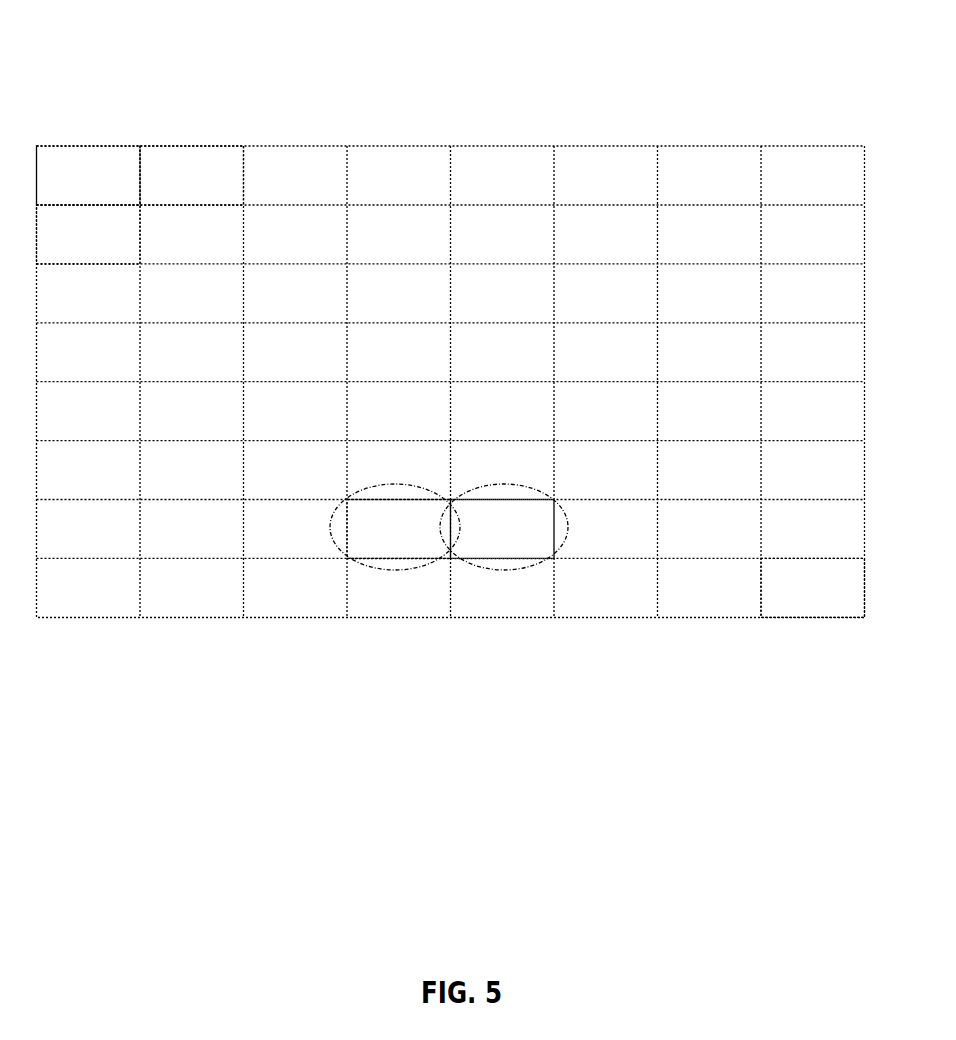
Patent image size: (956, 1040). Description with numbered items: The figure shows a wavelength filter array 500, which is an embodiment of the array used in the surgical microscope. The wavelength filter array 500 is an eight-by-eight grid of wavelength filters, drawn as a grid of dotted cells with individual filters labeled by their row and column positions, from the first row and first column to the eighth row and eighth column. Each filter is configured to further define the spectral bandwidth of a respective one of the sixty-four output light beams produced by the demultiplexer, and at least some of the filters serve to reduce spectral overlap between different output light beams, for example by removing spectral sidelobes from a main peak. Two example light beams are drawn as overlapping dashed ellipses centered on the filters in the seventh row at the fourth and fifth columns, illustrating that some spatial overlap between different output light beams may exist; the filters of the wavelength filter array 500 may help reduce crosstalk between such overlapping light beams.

The wavelength filter array 500 is at (110, 87).